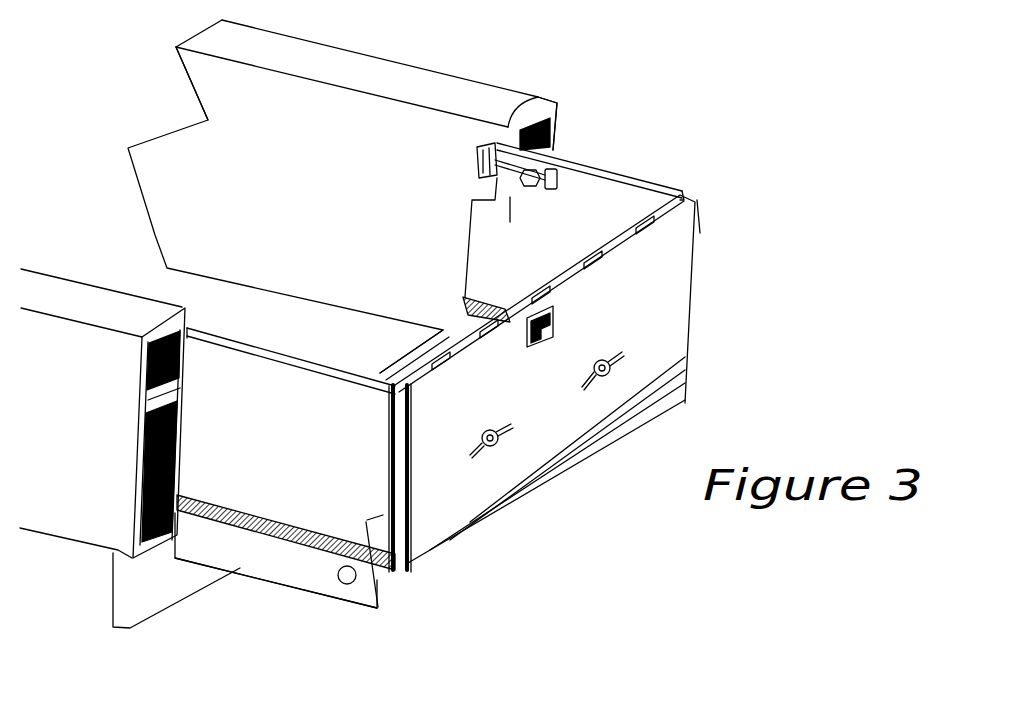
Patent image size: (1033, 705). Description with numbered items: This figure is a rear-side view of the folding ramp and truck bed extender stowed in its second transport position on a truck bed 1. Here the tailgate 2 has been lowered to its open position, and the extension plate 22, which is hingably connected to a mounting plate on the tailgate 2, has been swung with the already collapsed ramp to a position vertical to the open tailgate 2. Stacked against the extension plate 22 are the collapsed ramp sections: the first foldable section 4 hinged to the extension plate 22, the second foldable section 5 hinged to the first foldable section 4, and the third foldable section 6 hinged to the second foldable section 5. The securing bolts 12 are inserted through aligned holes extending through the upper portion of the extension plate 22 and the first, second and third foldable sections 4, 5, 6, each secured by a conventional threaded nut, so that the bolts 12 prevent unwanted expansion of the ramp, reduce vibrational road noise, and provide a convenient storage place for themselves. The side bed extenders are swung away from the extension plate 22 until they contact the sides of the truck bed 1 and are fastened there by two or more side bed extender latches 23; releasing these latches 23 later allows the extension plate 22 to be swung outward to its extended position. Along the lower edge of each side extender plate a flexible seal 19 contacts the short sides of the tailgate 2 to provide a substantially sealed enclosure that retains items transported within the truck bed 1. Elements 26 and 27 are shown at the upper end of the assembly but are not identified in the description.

The truck bed 1 is at (380, 77).
The tailgate 2 is at (297, 585).
The first foldable section 4 is at (402, 553).
The second foldable section 5 is at (408, 530).
The third foldable section 6 is at (447, 505).
The securing bolts 12 is at (587, 387).
The flexible seal 19 is at (463, 303).
The extension plate 22 is at (187, 372).
The side bed extender latches 23 is at (207, 335).
The end cap 26 is at (537, 95).
The hinge rod 27 is at (557, 147).